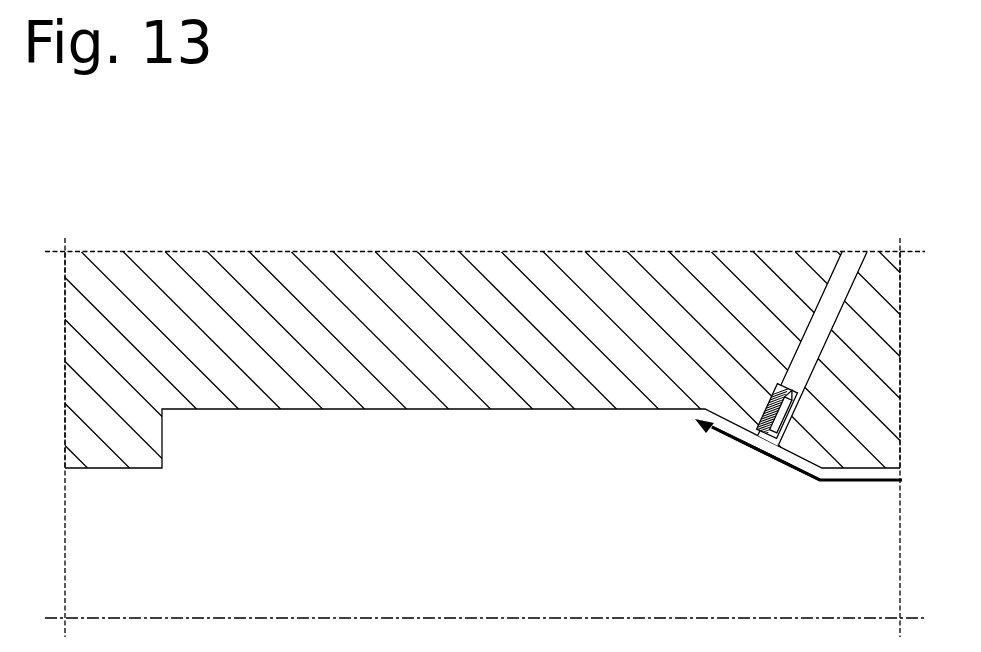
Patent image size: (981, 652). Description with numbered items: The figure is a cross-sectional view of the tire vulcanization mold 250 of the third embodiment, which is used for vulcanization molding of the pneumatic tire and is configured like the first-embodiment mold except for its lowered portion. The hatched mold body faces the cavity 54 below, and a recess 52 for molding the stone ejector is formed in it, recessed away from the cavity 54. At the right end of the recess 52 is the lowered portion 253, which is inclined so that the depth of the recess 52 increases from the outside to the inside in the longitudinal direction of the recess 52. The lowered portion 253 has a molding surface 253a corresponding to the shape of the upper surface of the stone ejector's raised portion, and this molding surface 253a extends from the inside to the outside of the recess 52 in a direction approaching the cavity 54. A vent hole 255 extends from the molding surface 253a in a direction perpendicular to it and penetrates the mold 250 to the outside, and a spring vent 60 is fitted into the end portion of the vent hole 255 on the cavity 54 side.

The tire vulcanization mold 250 is at (792, 233).
The vent hole 255 is at (853, 261).
The spring vent 60 is at (762, 407).
The lowered portion 253 is at (735, 456).
The molding surface 253a is at (790, 465).
The recess 52 is at (294, 475).
The cavity 54 is at (422, 557).